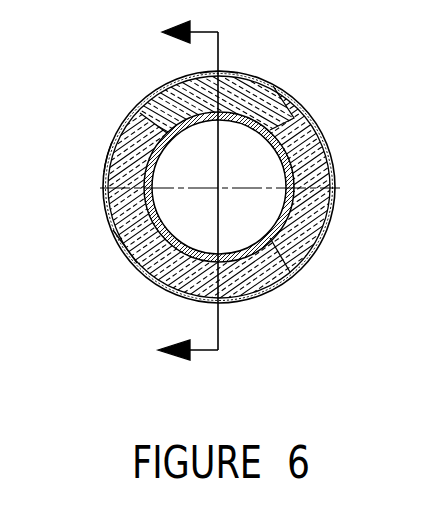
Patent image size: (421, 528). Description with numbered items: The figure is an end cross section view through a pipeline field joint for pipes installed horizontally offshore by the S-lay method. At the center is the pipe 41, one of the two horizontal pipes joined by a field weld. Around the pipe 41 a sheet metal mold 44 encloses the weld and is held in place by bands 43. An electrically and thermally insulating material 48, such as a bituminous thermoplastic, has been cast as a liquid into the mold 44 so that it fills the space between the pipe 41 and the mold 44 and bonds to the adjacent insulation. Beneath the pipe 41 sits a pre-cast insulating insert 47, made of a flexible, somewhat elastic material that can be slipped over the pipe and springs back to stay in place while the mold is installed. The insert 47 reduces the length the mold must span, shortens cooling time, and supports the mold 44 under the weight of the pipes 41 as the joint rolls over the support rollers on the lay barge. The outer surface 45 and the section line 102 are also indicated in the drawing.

The pipe 41 is at (290, 272).
The band 43 is at (110, 160).
The sheet metal mold 44 is at (280, 97).
The outer surface 45 is at (231, 73).
The pre-cast insulating insert 47 is at (134, 265).
The insulating material 48 is at (273, 86).
The section line 102 is at (161, 190).